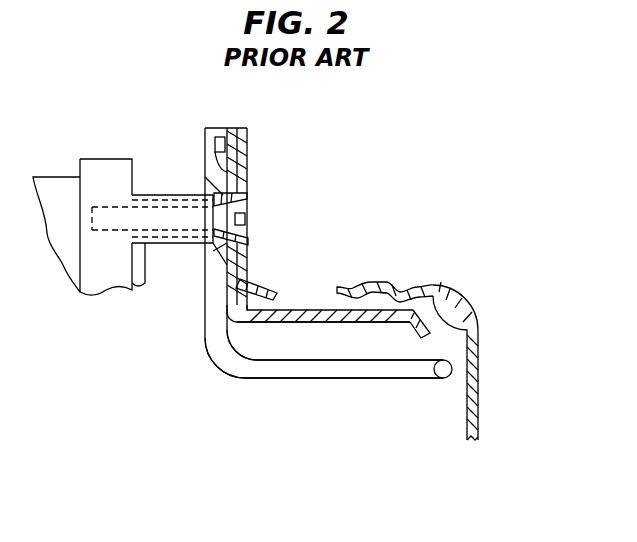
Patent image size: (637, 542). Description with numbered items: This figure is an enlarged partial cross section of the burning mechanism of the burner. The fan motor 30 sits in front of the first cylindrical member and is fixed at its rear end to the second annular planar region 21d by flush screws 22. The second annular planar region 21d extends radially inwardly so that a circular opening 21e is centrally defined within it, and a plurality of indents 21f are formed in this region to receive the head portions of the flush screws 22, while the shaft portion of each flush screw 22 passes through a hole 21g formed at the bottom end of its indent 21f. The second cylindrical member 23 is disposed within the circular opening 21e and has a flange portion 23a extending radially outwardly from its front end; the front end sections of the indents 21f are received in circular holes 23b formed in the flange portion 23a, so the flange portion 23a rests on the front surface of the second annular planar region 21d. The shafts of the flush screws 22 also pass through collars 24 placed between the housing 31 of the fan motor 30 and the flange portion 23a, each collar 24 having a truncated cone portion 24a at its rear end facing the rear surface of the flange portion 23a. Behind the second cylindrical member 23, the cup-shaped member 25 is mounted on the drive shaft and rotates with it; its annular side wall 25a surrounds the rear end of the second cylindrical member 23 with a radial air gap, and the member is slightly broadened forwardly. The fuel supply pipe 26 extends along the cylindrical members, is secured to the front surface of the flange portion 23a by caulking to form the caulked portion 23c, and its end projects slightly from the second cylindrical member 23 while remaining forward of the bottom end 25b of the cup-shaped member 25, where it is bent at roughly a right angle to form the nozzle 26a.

The second annular planar region 21d is at (247, 145).
The circular opening 21e is at (265, 305).
The indent 21f is at (248, 205).
The hole 21g is at (240, 235).
The flush screw 22 is at (245, 222).
The second cylindrical member 23 is at (323, 318).
The flange portion 23a is at (205, 177).
The circular hole 23b is at (205, 190).
The caulked portion 23c is at (220, 128).
The collar 24 is at (160, 246).
The truncated cone portion 24a is at (205, 253).
The cup-shaped member 25 is at (480, 353).
The annular side wall 25a is at (392, 290).
The bottom end 25b is at (480, 385).
The fuel supply pipe 26 is at (360, 368).
The nozzle 26a is at (441, 380).
The fan motor 30 is at (63, 222).
The housing 31 is at (103, 278).